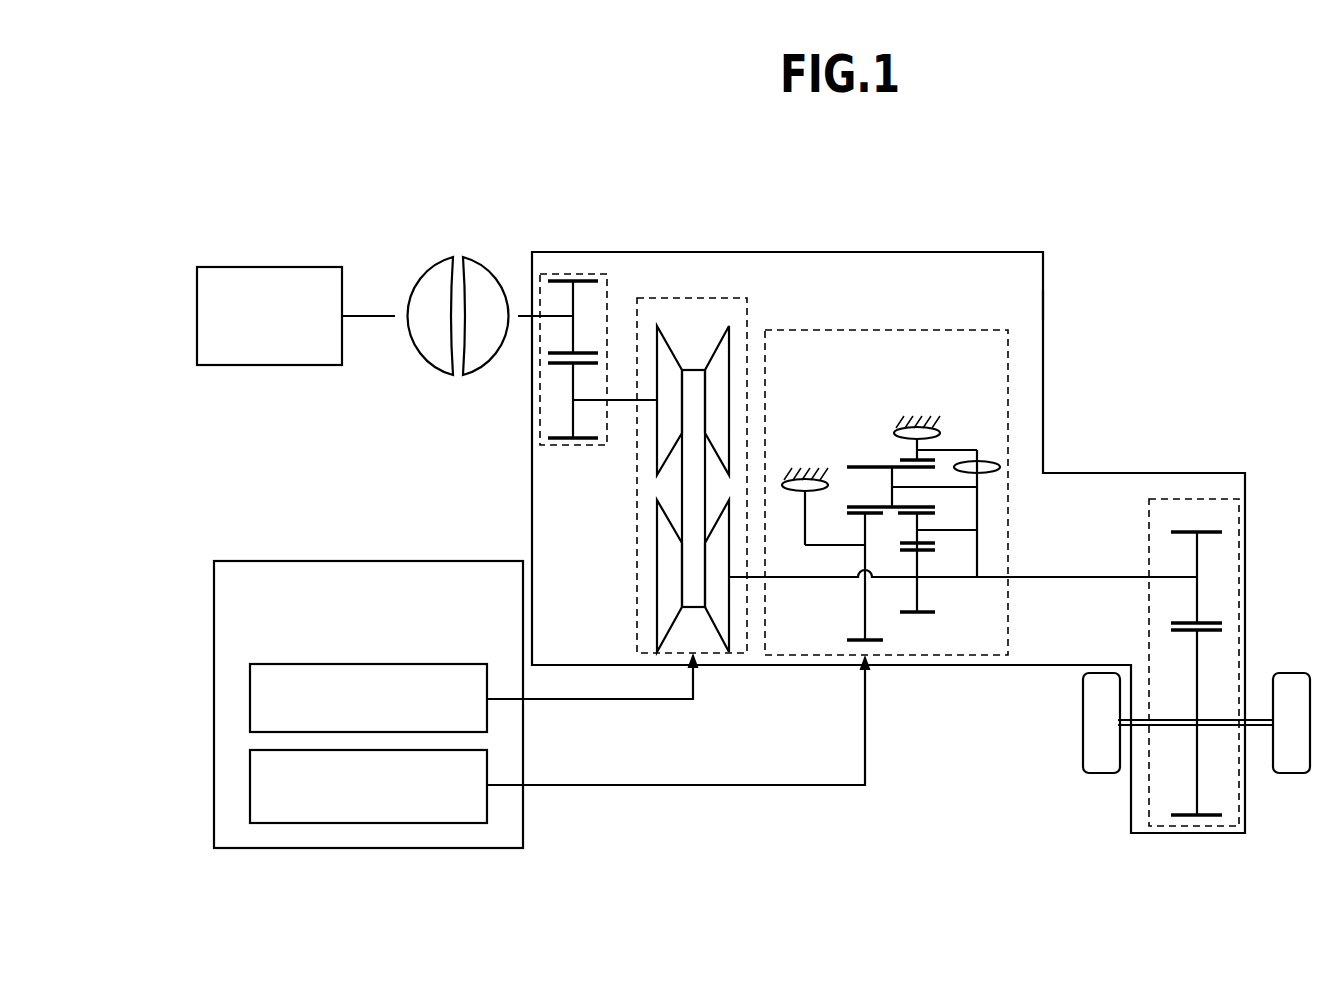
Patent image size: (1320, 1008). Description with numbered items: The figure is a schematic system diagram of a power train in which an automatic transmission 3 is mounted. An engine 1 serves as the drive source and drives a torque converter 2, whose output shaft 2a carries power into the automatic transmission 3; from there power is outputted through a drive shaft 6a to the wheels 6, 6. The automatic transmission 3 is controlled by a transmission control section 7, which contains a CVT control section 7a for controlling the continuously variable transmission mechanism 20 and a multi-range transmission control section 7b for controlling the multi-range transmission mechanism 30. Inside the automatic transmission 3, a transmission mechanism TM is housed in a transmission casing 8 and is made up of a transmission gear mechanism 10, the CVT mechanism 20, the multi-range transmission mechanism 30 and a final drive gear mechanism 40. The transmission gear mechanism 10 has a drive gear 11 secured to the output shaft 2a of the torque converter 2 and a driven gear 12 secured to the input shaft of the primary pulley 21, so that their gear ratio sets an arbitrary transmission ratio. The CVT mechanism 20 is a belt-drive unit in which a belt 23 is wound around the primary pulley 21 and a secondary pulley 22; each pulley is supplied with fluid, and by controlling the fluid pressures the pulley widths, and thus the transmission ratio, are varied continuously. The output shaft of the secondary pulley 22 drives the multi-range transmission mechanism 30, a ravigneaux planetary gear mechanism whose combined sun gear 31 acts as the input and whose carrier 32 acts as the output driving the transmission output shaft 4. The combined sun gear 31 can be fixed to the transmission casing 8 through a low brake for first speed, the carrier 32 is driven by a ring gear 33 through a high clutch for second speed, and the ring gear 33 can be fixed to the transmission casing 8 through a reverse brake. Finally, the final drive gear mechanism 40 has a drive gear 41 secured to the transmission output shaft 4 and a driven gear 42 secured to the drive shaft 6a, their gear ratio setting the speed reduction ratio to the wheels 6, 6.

The engine 1 is at (267, 265).
The torque converter 2 is at (416, 260).
The output shaft of the torque converter 2a is at (527, 322).
The automatic transmission 3 is at (958, 250).
The transmission output shaft 4 is at (1107, 577).
The wheels 6 is at (1100, 673).
The drive shaft 6a is at (1258, 727).
The transmission control section 7 is at (512, 673).
The CVT control section 7a is at (250, 698).
The multi-range transmission control section 7b is at (250, 783).
The transmission casing 8 is at (1043, 303).
The transmission gear mechanism 10 is at (553, 316).
The drive gear 11 is at (573, 296).
The driven gear 12 is at (573, 418).
The CVT mechanism 20 is at (662, 416).
The primary pulley 21 is at (672, 350).
The secondary pulley 22 is at (667, 588).
The belt 23 is at (690, 490).
The multi-range transmission mechanism 30 is at (929, 449).
The combined sun gear 31 is at (885, 615).
The carrier 32 is at (982, 516).
The ring gear 33 is at (895, 449).
The final drive gear mechanism 40 is at (973, 503).
The drive gear 41 is at (1197, 607).
The driven gear 42 is at (1197, 685).
The transmission mechanism TM is at (572, 183).